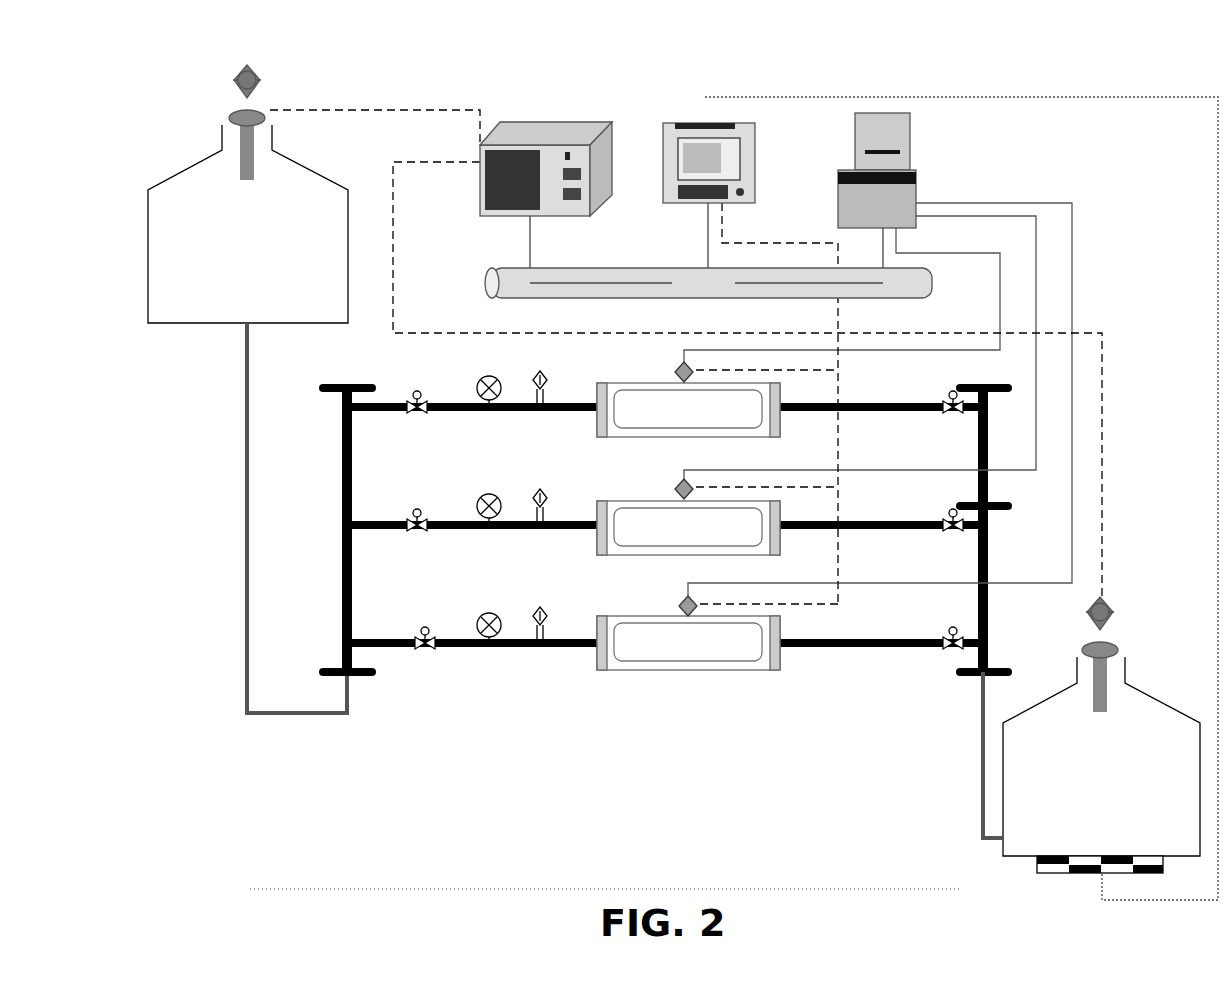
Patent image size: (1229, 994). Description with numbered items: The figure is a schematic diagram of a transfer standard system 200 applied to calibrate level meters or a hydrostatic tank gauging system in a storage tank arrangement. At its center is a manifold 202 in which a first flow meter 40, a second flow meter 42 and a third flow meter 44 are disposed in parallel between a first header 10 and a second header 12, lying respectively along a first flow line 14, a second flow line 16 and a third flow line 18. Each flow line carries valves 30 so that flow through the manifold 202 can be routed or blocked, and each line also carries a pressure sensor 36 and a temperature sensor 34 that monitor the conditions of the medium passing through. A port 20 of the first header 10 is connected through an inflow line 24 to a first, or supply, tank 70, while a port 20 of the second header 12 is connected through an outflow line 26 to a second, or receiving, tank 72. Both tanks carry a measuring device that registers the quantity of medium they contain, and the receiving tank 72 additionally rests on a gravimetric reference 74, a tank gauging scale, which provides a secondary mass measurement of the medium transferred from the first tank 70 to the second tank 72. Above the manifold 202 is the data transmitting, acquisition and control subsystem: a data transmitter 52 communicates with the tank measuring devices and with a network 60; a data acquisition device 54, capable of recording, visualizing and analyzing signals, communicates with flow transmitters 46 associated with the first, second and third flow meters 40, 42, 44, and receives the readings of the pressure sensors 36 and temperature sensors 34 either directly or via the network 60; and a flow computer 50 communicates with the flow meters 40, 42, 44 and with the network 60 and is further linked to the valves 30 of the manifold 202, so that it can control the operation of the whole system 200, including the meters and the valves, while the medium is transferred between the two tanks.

The first header 10 is at (343, 470).
The second header 12 is at (990, 490).
The first flow line 14 is at (382, 412).
The second flow line 16 is at (380, 530).
The third flow line 18 is at (385, 648).
The port 20 is at (340, 677).
The inflow line 24 is at (245, 470).
The outflow line 26 is at (980, 712).
The valve 30 is at (414, 394).
The temperature sensor 34 is at (548, 378).
The pressure sensor 36 is at (495, 380).
The first flow meter 40 is at (655, 420).
The second flow meter 42 is at (655, 540).
The third flow meter 44 is at (658, 650).
The flow transmitter 46 is at (676, 372).
The flow computer 50 is at (905, 150).
The data transmitter 52 is at (606, 122).
The data acquisition device 54 is at (760, 155).
The network 60 is at (520, 272).
The first tank 70 is at (148, 325).
The second tank 72 is at (1150, 705).
The gravimetric reference 74 is at (1040, 870).
The transfer standard system 200 is at (958, 80).
The manifold 202 is at (495, 717).